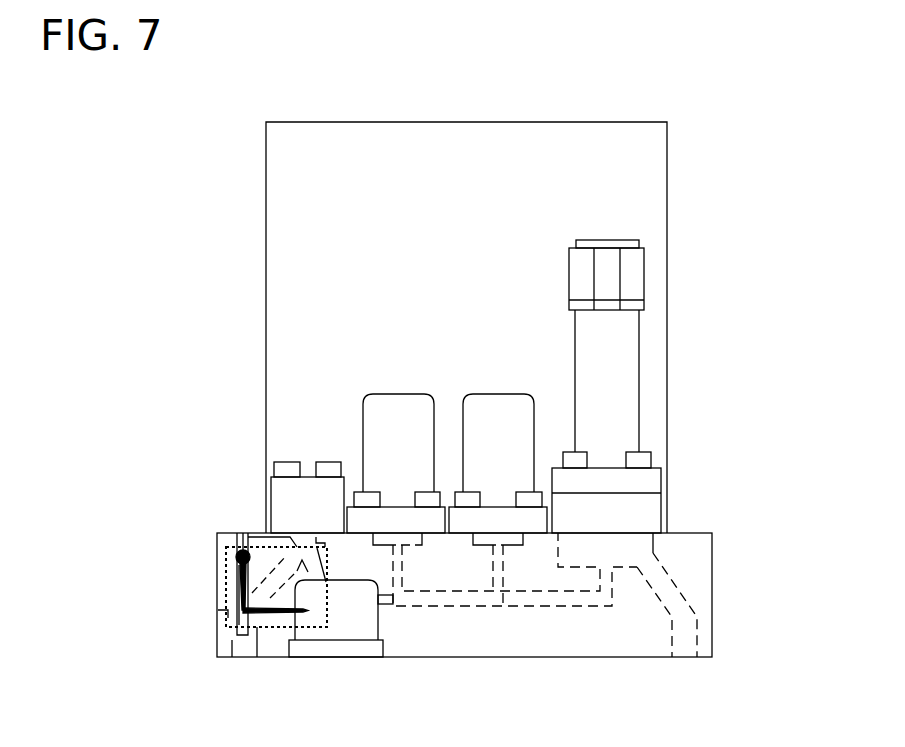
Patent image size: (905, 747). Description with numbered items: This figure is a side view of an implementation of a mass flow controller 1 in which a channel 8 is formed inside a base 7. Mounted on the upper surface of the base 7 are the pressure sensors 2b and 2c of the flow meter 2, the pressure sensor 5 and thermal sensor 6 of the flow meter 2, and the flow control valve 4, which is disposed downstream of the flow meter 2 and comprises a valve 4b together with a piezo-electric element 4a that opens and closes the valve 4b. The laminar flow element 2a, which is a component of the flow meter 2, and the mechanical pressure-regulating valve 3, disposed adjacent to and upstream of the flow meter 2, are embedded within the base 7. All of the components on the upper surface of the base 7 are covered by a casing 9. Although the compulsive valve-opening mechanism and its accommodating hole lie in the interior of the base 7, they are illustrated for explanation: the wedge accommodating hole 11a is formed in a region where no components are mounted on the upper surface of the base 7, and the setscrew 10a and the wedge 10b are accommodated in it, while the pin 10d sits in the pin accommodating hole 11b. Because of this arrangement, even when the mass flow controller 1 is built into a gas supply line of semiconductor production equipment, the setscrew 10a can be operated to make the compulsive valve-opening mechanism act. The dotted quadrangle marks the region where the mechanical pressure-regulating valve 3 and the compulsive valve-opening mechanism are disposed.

The mass flow controller 1 is at (782, 148).
The flow meter 2 is at (447, 383).
The laminar flow element 2a is at (445, 608).
The pressure sensor 2b is at (394, 394).
The pressure sensor 2c is at (498, 432).
The mechanical pressure-regulating valve 3 is at (337, 640).
The flow control valve 4 is at (667, 386).
The piezo-electric element 4a is at (628, 419).
The valve 4b is at (652, 513).
The pressure sensor 5 is at (263, 485).
The thermal sensor 6 is at (273, 488).
The base 7 is at (528, 650).
The channel 8 is at (667, 588).
The casing 9 is at (340, 121).
The setscrew 10a is at (237, 557).
The wedge 10b is at (237, 578).
The pin 10d is at (272, 628).
The wedge accommodating hole 11a is at (243, 545).
The pin accommodating hole 11b is at (228, 610).